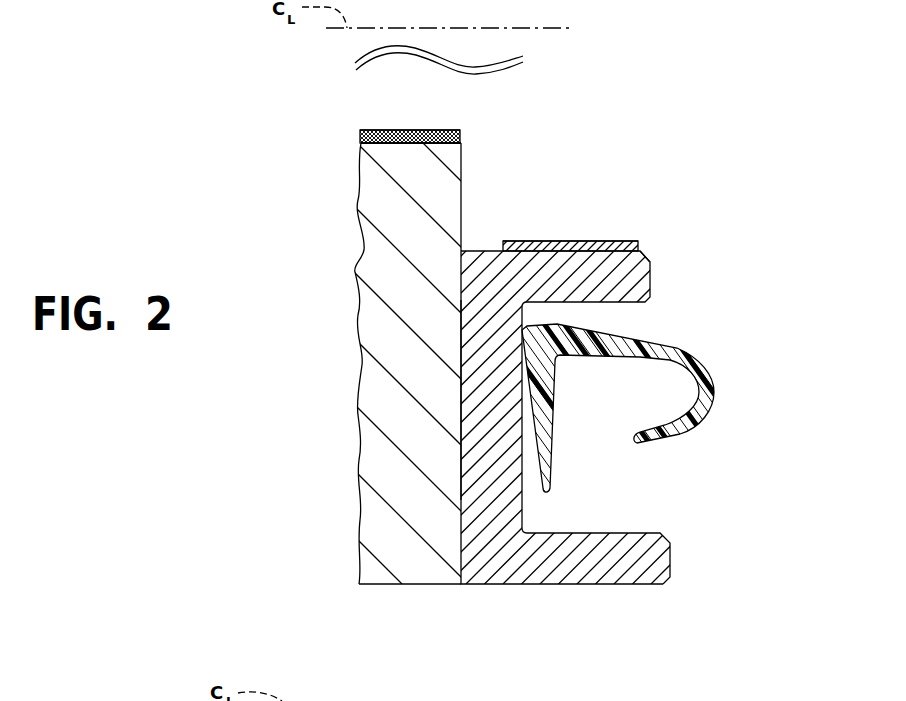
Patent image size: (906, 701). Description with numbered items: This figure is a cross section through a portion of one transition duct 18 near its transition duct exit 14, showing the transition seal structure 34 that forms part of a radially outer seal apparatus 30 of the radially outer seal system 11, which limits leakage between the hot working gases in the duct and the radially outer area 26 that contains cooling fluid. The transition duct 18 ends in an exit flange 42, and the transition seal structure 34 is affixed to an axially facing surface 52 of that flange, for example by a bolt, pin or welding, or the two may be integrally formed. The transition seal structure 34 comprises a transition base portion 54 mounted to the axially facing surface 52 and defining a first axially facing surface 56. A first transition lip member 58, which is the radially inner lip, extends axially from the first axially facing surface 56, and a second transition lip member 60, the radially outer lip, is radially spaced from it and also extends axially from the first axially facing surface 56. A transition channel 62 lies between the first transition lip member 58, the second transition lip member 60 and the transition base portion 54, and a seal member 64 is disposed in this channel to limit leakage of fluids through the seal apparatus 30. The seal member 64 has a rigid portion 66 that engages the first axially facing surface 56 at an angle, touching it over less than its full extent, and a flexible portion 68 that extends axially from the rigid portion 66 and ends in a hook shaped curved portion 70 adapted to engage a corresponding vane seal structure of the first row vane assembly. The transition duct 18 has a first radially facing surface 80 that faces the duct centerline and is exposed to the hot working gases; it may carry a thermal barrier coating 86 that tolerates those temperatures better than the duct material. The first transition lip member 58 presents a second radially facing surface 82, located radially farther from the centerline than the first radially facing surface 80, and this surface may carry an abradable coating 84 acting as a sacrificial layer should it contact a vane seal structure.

The radially outer seal system 11 is at (639, 594).
The transition duct exit 14 is at (483, 135).
The transition duct 18 is at (335, 505).
The radially outer area 26 is at (370, 628).
The radially outer seal apparatus 30 is at (499, 589).
The transition seal structure 34 is at (644, 248).
The exit flange 42 is at (372, 337).
The axially facing surface 52 is at (461, 180).
The transition base portion 54 is at (467, 412).
The first axially facing surface 56 is at (522, 480).
The first transition lip member 58 is at (635, 280).
The second transition lip member 60 is at (657, 560).
The transition channel 62 is at (619, 446).
The seal member 64 is at (720, 381).
The rigid portion 66 is at (547, 393).
The flexible portion 68 is at (679, 344).
The curved portion 70 is at (692, 428).
The first radially facing surface 80 is at (398, 130).
The second radially facing surface 82 is at (543, 241).
The abradable coating 84 is at (592, 241).
The thermal barrier coating 86 is at (418, 130).